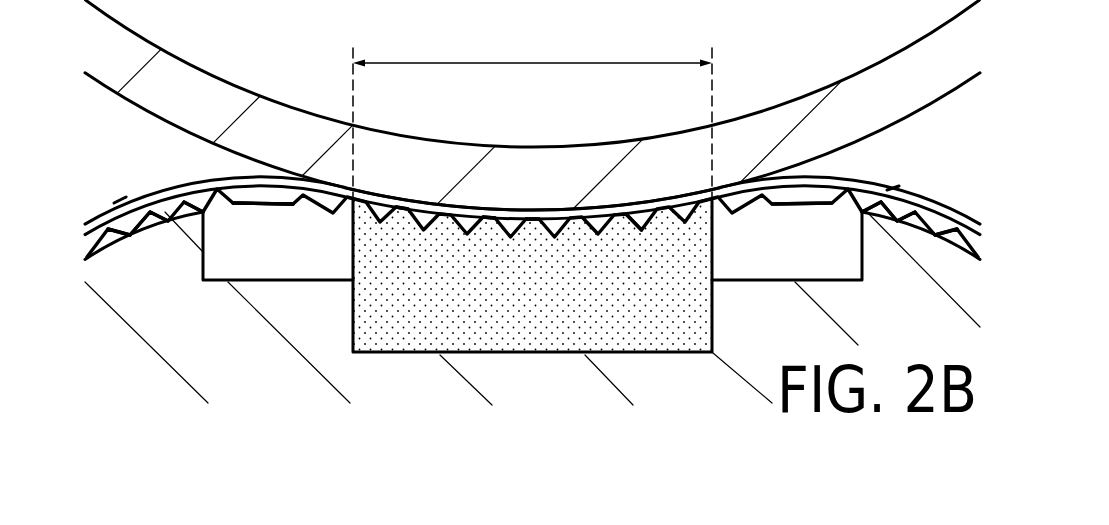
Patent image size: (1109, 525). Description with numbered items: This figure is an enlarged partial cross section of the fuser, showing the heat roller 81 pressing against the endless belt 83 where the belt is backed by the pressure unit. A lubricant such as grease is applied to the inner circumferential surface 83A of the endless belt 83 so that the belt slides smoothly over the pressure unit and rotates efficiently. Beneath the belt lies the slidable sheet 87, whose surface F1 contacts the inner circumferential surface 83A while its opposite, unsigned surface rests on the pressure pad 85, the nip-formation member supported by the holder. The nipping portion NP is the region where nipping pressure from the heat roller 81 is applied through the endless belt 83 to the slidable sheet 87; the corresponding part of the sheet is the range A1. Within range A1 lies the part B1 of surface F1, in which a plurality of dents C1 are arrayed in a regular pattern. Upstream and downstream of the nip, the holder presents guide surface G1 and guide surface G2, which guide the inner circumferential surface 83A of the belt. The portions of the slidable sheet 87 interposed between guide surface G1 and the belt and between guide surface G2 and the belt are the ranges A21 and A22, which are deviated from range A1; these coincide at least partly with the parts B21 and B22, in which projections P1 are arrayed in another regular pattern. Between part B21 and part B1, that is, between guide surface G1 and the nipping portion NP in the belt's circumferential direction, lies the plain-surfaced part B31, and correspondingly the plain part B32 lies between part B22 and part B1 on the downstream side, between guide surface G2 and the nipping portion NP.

The heat roller 81 is at (927, 107).
The endless belt 83 is at (140, 196).
The inner circumferential surface 83A is at (244, 193).
The pressure pad 85 is at (585, 322).
The slidable sheet 87 is at (299, 214).
The nipping portion NP is at (532, 112).
The range A1 is at (404, 200).
The range A21 is at (194, 201).
The range A22 is at (873, 200).
The part B1 is at (538, 216).
The part B21 is at (148, 213).
The part B22 is at (909, 222).
The part B31 is at (275, 203).
The part B32 is at (792, 200).
The dents C1 is at (638, 204).
The surface F1 is at (492, 210).
The guide surface G1 is at (112, 227).
The guide surface G2 is at (946, 227).
The projections P1 is at (120, 207).